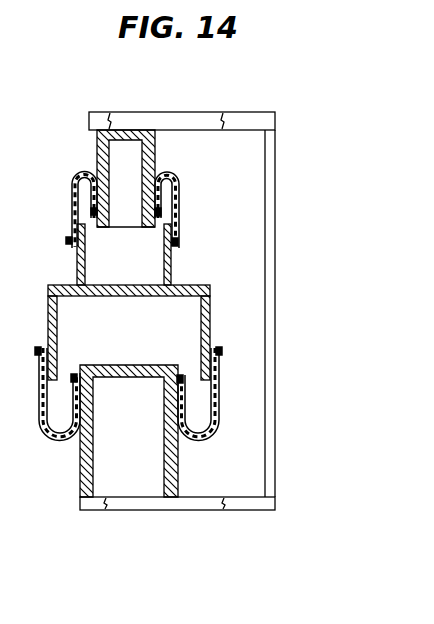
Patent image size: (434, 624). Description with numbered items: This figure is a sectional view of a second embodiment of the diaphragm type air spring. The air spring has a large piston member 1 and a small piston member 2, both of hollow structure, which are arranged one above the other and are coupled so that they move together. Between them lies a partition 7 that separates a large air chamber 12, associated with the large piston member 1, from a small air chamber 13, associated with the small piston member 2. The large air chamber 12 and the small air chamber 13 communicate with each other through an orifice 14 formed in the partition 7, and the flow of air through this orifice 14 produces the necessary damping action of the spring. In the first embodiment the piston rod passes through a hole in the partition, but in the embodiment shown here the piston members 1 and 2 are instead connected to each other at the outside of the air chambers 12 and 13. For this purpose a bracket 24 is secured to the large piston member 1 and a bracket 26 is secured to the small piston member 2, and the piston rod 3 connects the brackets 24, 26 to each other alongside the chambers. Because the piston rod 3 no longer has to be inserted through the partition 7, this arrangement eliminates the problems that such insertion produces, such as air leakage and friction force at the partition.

The large piston member 1 is at (92, 468).
The small piston member 2 is at (97, 151).
The piston rod 3 is at (270, 303).
The partition 7 is at (93, 294).
The large air chamber 12 is at (147, 347).
The small air chamber 13 is at (136, 262).
The orifice 14 is at (127, 288).
The bracket 24 is at (236, 503).
The bracket 26 is at (243, 121).